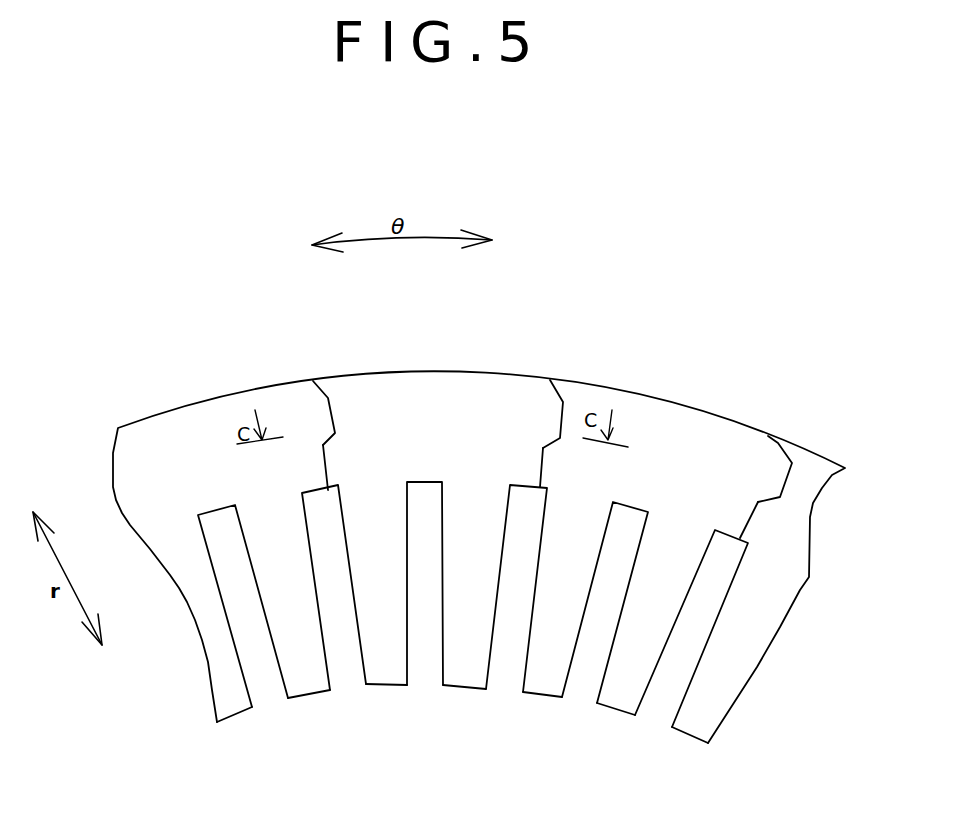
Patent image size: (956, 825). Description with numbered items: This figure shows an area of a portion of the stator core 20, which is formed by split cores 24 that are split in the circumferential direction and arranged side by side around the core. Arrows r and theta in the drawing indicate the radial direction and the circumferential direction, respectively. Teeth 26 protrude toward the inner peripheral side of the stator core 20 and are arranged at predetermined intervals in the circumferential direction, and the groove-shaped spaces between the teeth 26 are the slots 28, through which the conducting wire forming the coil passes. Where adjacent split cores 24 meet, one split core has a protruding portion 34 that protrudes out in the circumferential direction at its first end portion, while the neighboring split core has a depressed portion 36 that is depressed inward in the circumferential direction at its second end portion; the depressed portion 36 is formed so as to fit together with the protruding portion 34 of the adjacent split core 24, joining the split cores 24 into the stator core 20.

The stator core 20 is at (698, 307).
The split core 24 is at (217, 418).
The tooth 26 is at (300, 675).
The slot 28 is at (258, 668).
The protruding portion 34 is at (322, 410).
The depressed portion 36 is at (335, 408).